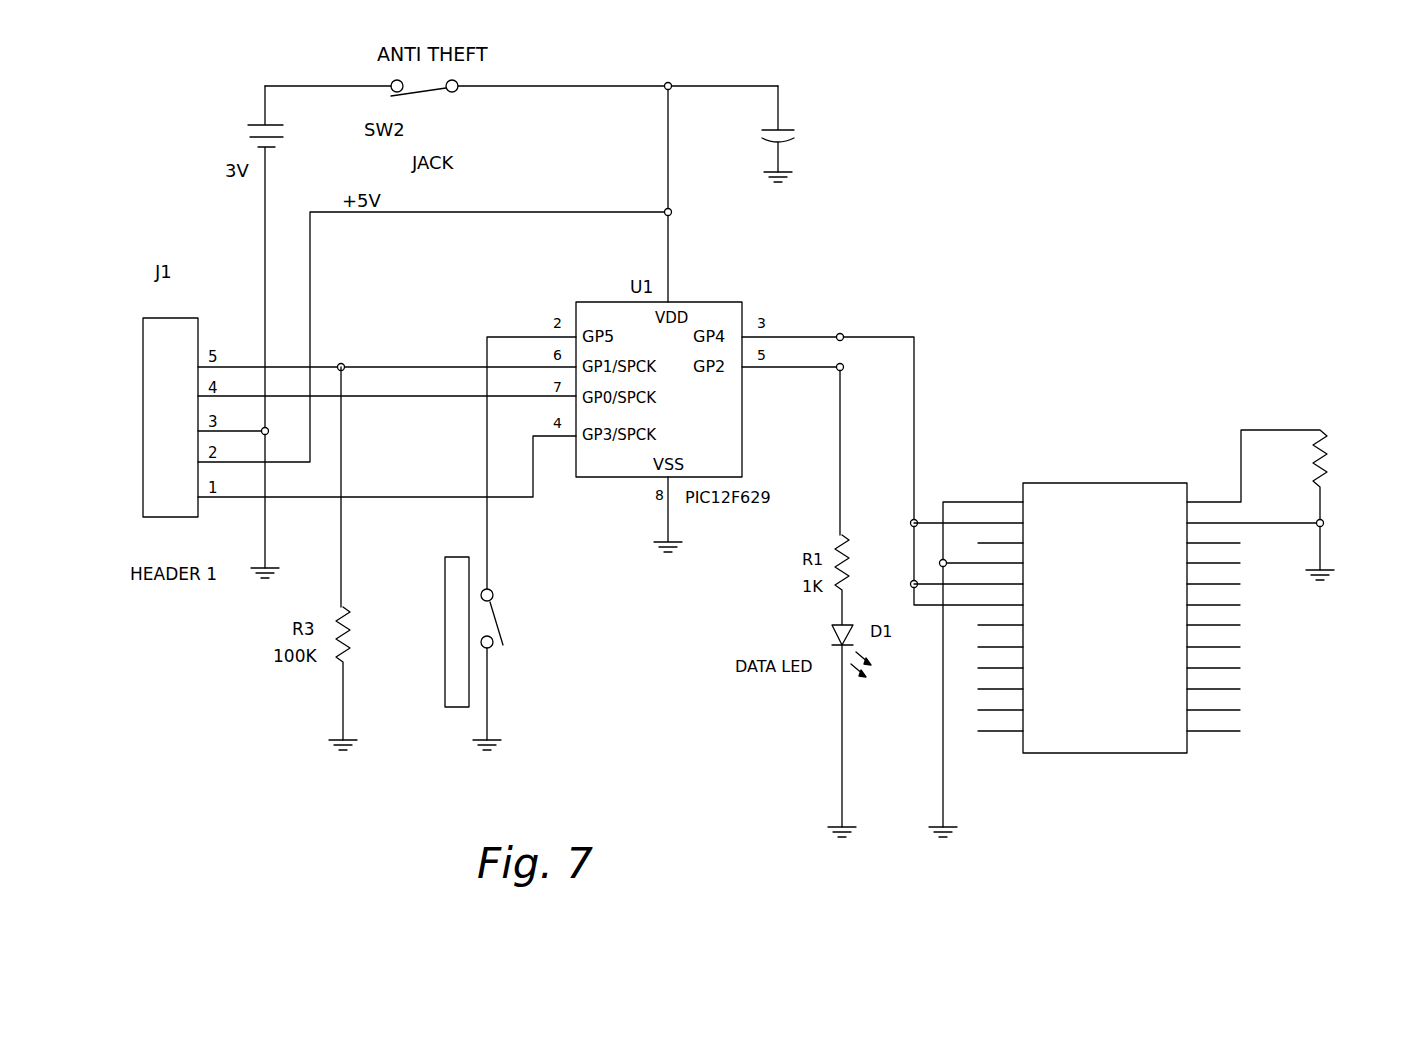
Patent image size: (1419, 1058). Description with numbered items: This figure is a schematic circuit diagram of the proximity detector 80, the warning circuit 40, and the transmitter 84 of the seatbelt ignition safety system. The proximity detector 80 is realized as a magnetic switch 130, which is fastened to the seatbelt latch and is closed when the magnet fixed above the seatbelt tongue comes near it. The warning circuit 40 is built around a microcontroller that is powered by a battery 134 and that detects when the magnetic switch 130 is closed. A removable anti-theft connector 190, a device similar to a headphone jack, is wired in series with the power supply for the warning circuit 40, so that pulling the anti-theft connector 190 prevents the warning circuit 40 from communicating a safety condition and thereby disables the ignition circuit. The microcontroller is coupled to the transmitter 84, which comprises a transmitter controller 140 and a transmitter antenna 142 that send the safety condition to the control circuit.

The battery 134 is at (256, 122).
The anti-theft connector 190 is at (456, 92).
The warning circuit 40 is at (880, 136).
The magnetic switch 130 is at (502, 627).
The proximity detector 80 is at (509, 672).
The transmitter 84 is at (1133, 598).
The transmitter controller 140 is at (1187, 753).
The transmitter antenna 142 is at (1320, 430).